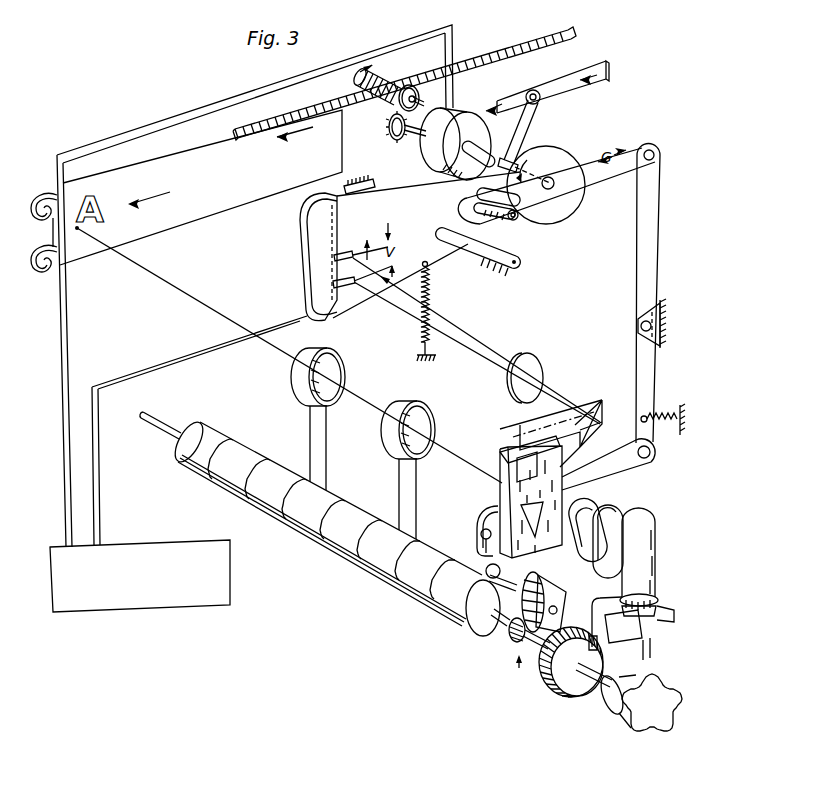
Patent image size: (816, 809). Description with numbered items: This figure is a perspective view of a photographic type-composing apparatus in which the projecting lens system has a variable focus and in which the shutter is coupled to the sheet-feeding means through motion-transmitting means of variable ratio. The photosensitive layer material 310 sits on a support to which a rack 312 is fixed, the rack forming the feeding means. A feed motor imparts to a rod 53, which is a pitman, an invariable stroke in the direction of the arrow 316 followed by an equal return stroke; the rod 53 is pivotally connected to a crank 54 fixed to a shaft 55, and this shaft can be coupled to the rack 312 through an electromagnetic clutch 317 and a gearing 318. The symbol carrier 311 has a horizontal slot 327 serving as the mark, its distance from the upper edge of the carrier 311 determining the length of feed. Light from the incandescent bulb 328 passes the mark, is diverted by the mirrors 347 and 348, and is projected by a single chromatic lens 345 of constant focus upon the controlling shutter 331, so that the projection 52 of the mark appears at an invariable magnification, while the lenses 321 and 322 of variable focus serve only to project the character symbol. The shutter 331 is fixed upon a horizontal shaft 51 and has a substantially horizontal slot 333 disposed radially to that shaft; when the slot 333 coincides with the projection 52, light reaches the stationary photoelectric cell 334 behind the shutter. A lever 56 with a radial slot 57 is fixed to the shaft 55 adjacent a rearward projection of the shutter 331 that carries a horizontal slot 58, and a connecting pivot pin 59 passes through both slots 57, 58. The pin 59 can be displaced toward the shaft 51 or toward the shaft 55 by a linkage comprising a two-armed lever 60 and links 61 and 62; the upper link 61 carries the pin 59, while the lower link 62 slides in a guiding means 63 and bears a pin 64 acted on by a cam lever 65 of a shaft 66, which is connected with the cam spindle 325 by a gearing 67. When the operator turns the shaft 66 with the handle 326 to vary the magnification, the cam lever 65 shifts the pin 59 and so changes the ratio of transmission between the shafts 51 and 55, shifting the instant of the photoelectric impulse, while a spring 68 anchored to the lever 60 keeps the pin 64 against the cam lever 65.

The photosensitive layer material 310 is at (177, 226).
The rack 312 is at (512, 36).
The arrow 316 is at (609, 72).
The electromagnetic clutch 317 is at (431, 168).
The gearing 318 is at (386, 128).
The lens 321 is at (392, 435).
The lens 322 is at (310, 390).
The cam spindle 325 is at (382, 572).
The handle 326 is at (620, 712).
The horizontal slot 327 is at (508, 449).
The incandescent bulb 328 is at (638, 508).
The controlling shutter 331 is at (311, 254).
The slot 333 is at (344, 290).
The photoelectric cell 334 is at (302, 204).
The single chromatic lens 345 is at (527, 353).
The mirror 347 is at (517, 427).
The mirror 348 is at (600, 410).
The carrier 311 is at (562, 490).
The horizontal shaft 51 is at (367, 184).
The projection of the mark 52 is at (341, 255).
The rod 53 is at (572, 87).
The crank 54 is at (524, 133).
The shaft 55 is at (479, 145).
The lever 56 is at (562, 160).
The radial slot 57 is at (508, 186).
The horizontal slot 58 is at (476, 209).
The connecting pivot pin 59 is at (495, 224).
The two-armed lever 60 is at (640, 238).
The link 61 is at (578, 187).
The link 62 is at (620, 467).
The guiding means 63 is at (496, 508).
The pin 64 is at (481, 534).
The cam lever 65 is at (468, 584).
The shaft 66 is at (505, 627).
The gearing 67 is at (561, 662).
The spring 68 is at (663, 415).